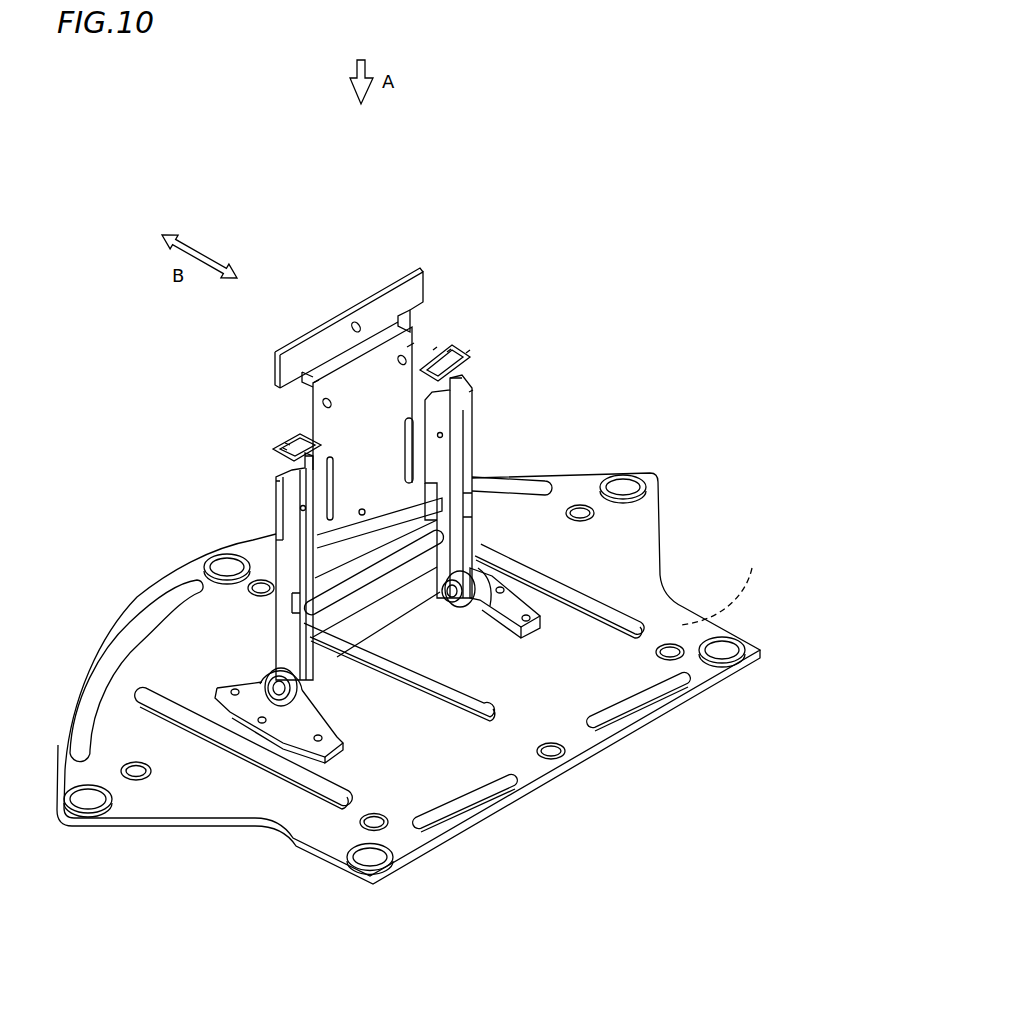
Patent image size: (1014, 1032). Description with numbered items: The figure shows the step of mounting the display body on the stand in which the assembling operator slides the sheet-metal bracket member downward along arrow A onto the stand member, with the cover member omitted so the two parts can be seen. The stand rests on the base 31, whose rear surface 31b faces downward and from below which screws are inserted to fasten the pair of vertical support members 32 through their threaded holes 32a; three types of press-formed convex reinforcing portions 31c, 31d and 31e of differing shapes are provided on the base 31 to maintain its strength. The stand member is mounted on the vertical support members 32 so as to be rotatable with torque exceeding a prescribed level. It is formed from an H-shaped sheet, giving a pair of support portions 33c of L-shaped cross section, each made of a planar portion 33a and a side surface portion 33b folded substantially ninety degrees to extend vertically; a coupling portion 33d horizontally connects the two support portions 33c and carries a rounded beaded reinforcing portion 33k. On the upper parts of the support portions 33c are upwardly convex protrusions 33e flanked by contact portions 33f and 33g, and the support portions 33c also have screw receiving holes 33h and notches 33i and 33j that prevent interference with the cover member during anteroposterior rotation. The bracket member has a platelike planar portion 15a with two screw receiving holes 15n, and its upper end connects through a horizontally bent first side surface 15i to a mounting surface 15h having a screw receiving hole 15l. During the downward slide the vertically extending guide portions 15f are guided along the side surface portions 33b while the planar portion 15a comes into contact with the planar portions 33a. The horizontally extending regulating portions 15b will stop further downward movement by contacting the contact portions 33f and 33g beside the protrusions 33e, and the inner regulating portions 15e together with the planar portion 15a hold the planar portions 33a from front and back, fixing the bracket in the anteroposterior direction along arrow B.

The planar portion 15a is at (407, 347).
The regulating portions 15b is at (283, 448).
The regulating portions 15e is at (285, 443).
The guide portions 15f is at (280, 481).
The mounting surface 15h is at (378, 308).
The first side surface 15i is at (412, 326).
The screw receiving hole 15l is at (355, 322).
The screw receiving holes 15n is at (322, 412).
The base 31 is at (667, 614).
The rear surface 31b is at (729, 587).
The convex reinforcing portions 31c is at (120, 653).
The convex reinforcing portions 31d is at (187, 710).
The convex reinforcing portions 31e is at (443, 810).
The vertical support member 32 is at (256, 708).
The threaded holes 32a is at (233, 688).
The planar portions 33a is at (283, 556).
The side surface portions 33b is at (283, 540).
The support portions 33c is at (282, 641).
The coupling portion 33d is at (385, 572).
The protrusions 33e is at (275, 492).
The contact portions 33f is at (292, 521).
The contact portions 33g is at (331, 407).
The screw receiving holes 33h is at (336, 508).
The notch 33i is at (411, 505).
The notch 33j is at (273, 608).
The reinforcing portion 33k is at (352, 588).